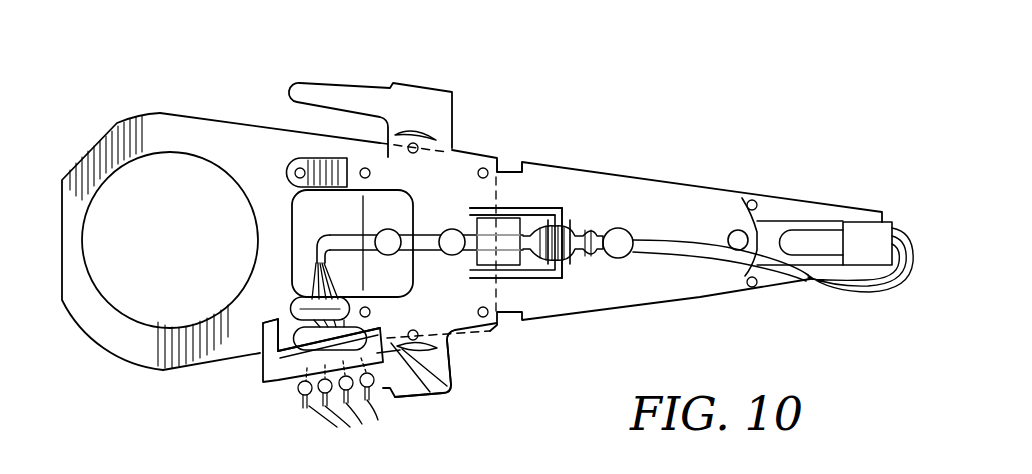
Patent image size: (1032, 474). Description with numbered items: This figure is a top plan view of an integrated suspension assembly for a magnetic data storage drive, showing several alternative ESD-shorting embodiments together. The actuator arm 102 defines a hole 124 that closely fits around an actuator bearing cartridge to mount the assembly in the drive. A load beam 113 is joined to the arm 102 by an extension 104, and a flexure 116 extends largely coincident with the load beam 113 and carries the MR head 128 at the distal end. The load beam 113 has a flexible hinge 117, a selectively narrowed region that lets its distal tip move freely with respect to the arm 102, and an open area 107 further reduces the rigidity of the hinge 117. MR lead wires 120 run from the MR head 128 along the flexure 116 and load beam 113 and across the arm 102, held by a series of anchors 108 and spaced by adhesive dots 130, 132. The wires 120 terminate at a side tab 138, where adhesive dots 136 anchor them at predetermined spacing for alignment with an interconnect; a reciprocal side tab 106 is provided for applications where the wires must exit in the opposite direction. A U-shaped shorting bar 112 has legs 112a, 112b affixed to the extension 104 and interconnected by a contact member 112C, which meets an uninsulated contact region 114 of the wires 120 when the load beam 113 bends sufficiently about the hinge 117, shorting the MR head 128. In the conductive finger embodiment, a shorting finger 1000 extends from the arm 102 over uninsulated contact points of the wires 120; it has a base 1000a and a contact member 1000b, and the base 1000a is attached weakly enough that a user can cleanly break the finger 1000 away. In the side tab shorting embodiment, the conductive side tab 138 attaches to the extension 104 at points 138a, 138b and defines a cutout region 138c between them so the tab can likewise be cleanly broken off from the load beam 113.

The actuator arm 102 is at (116, 130).
The extension 104 is at (284, 158).
The reciprocal side tab 106 is at (339, 85).
The open area 107 is at (473, 221).
The anchors 108 is at (450, 252).
The shorting bar 112 is at (572, 196).
The leg 112a is at (531, 207).
The leg 112b is at (531, 279).
The contact member 112C is at (573, 269).
The load beam 113 is at (714, 189).
The contact region 114 is at (590, 219).
The flexure 116 is at (768, 220).
The flexible hinge 117 is at (503, 170).
The MR lead wires 120 is at (388, 247).
The hole 124 is at (84, 241).
The MR head 128 is at (868, 234).
The adhesive dot 130 is at (290, 304).
The adhesive dot 132 is at (290, 338).
The adhesive dots 136 is at (338, 413).
The side tab 138 is at (432, 407).
The attachment point 138a is at (451, 350).
The attachment point 138b is at (434, 394).
The cutout region 138c is at (450, 383).
The shorting finger 1000 is at (277, 388).
The base 1000a is at (260, 345).
The contact member 1000b is at (404, 370).